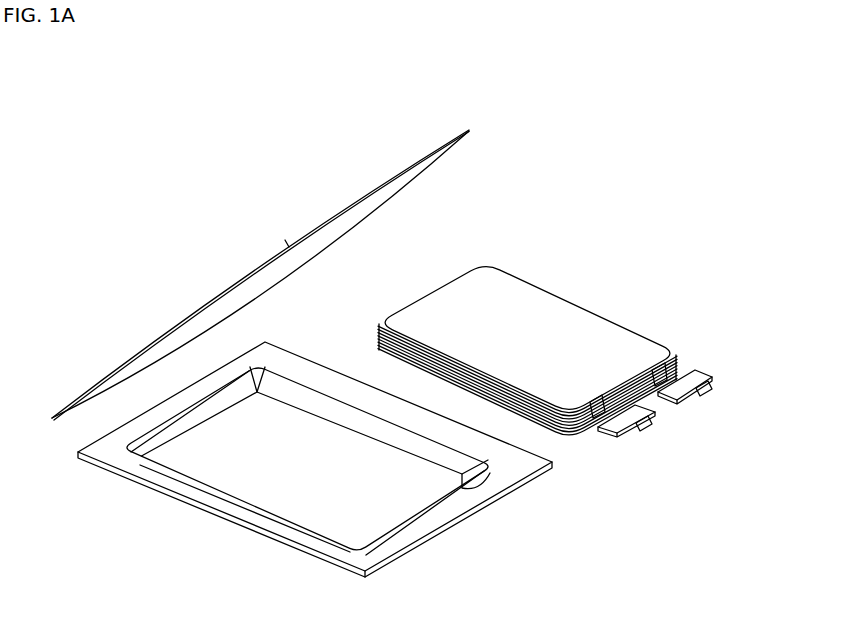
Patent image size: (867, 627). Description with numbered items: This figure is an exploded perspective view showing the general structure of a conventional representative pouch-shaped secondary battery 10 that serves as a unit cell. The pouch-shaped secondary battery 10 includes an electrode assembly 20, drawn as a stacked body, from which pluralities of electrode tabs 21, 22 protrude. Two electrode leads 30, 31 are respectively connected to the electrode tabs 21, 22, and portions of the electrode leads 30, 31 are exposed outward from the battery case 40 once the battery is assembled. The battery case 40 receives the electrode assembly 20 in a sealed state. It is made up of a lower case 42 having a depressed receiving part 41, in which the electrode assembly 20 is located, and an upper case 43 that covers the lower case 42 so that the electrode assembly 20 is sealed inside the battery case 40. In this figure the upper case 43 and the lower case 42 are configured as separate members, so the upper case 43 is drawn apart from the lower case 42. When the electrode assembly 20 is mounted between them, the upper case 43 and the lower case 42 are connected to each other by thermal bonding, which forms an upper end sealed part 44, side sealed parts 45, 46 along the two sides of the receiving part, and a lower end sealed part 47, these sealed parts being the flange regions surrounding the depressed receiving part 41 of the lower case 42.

The pouch-shaped secondary battery 10 is at (26, 118).
The electrode assembly 20 is at (592, 286).
The electrode tab 21 is at (653, 365).
The electrode tab 22 is at (600, 407).
The electrode lead 30 is at (713, 392).
The electrode lead 31 is at (653, 427).
The battery case 40 is at (50, 542).
The depressed receiving part 41 is at (315, 476).
The lower case 42 is at (110, 474).
The upper case 43 is at (50, 421).
The upper end sealed part 44 is at (433, 513).
The side sealed part 45 is at (365, 402).
The side sealed part 46 is at (233, 507).
The lower end sealed part 47 is at (157, 418).